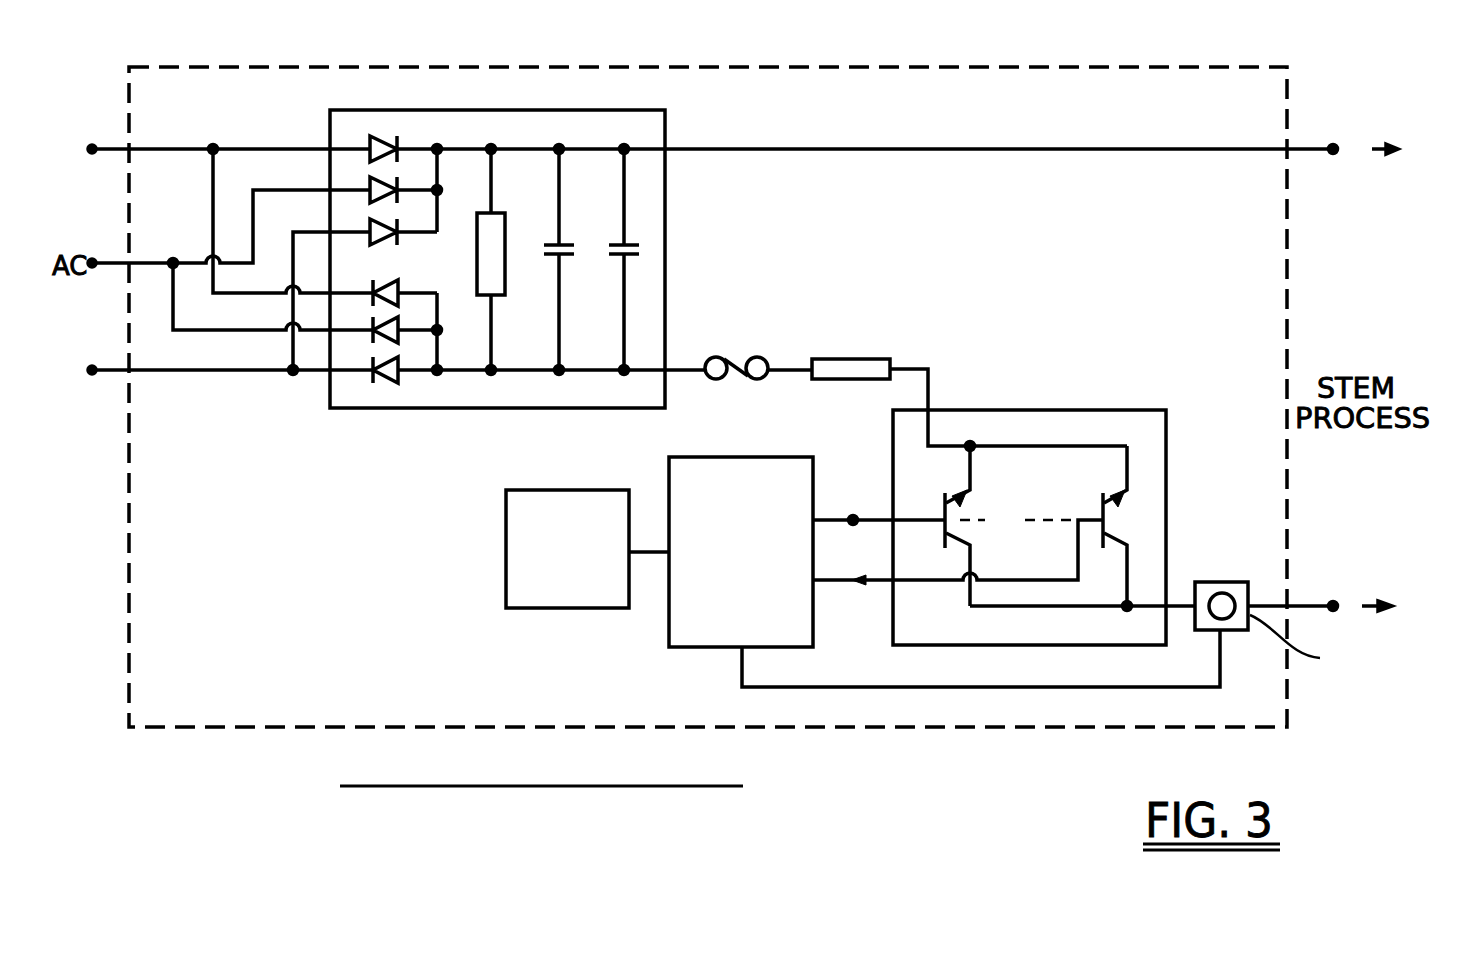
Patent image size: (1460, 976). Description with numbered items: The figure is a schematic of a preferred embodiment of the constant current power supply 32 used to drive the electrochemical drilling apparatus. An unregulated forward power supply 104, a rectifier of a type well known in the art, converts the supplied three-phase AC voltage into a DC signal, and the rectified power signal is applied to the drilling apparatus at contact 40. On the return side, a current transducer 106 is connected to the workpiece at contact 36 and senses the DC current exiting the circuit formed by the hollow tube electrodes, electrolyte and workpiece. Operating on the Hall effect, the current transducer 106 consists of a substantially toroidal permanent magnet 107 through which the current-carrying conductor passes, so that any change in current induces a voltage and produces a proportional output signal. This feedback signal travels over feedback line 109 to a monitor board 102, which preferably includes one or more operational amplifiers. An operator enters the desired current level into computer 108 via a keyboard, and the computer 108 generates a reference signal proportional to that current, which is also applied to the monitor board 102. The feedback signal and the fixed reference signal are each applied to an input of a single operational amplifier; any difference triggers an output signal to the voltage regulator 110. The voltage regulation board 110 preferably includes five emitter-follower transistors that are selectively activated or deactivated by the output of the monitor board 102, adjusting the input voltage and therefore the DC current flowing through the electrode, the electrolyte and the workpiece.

The constant current power supply 32 is at (884, 67).
The unregulated forward power supply 104 is at (665, 176).
The voltage regulator 110 is at (1166, 463).
The monitor board 102 is at (690, 649).
The computer 108 is at (506, 535).
The feedback line 109 is at (810, 688).
The current transducer 106 is at (1240, 626).
The torroidal permanent magnet 107 is at (1218, 593).
The contact 40 is at (1048, 153).
The contact 36 is at (1335, 606).